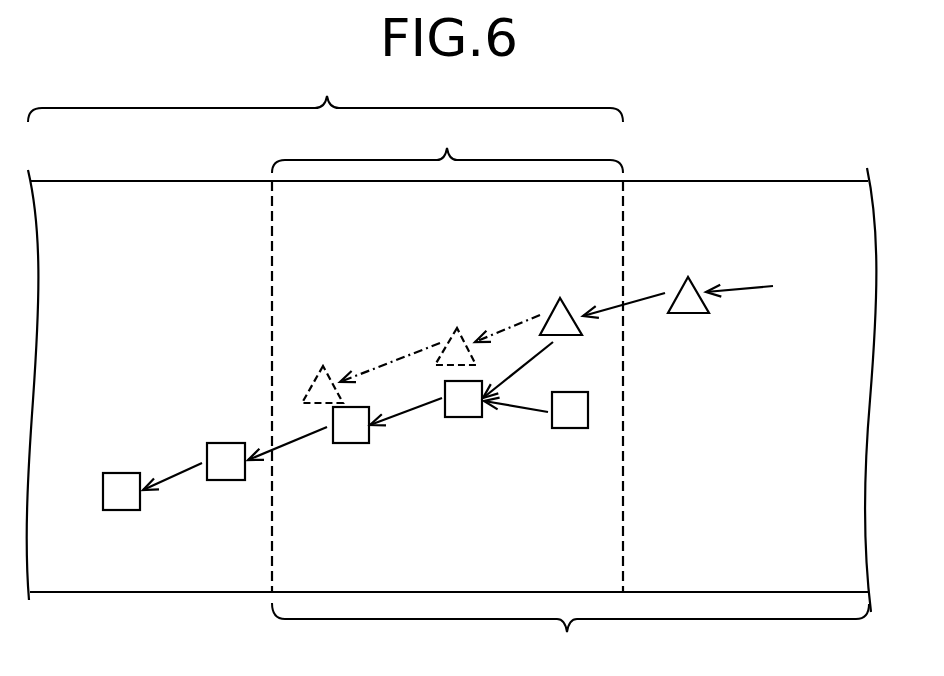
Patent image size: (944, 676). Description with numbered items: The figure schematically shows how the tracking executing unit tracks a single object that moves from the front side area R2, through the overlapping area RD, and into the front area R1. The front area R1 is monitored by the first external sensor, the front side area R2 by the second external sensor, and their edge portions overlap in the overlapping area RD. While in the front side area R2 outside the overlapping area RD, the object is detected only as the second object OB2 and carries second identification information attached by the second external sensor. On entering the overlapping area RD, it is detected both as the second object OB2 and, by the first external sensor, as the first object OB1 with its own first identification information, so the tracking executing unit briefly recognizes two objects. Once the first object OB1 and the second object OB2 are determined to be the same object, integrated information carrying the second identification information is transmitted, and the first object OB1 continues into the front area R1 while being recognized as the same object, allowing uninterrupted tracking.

The first object OB1 is at (688, 276).
The second object OB2 is at (462, 418).
The front area R1 is at (325, 91).
The overlapping area RD is at (447, 144).
The front side area R2 is at (570, 635).